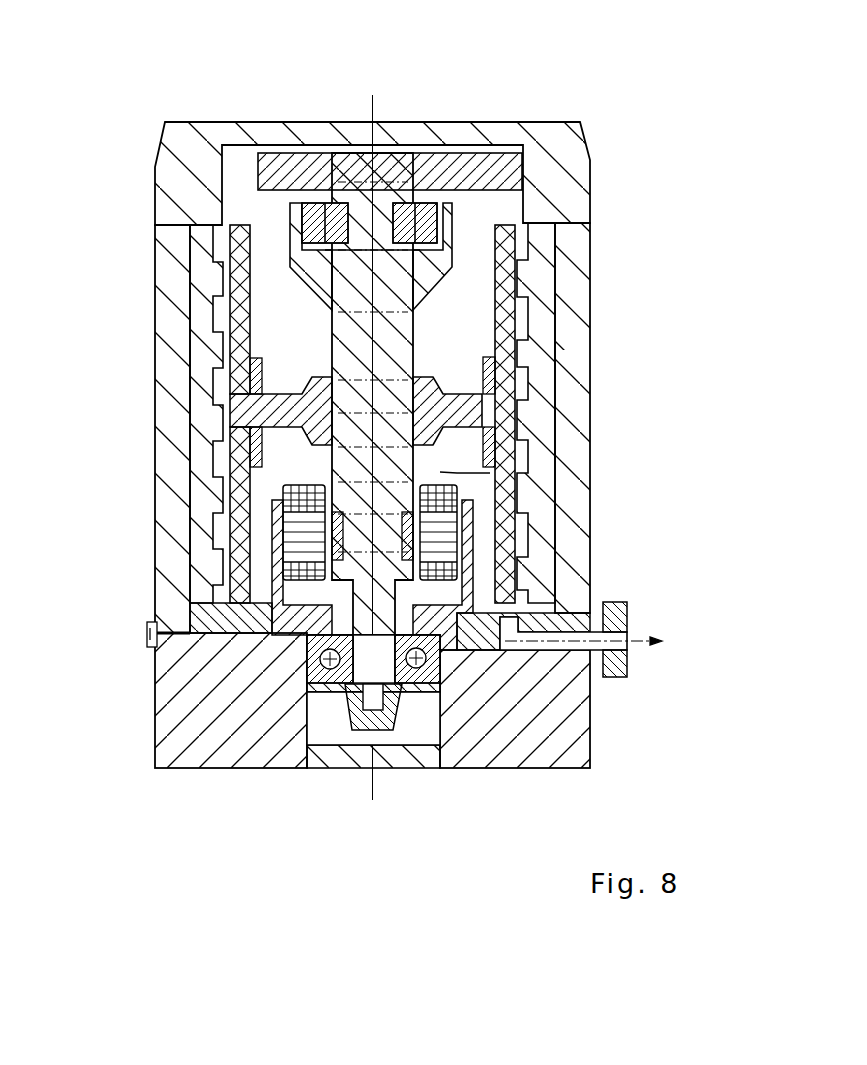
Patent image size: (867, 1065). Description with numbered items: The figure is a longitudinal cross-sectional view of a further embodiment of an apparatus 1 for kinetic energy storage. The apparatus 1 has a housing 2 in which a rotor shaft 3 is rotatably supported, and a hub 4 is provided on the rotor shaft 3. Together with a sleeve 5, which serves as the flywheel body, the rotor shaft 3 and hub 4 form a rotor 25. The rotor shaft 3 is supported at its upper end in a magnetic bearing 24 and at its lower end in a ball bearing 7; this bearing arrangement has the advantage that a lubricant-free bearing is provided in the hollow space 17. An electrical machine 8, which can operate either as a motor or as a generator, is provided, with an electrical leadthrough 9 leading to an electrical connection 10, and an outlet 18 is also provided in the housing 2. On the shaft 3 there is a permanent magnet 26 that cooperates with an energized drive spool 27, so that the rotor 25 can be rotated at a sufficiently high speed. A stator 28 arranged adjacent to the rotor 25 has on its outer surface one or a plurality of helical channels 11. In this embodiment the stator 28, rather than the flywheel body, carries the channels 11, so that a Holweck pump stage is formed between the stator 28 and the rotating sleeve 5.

The apparatus 1 is at (381, 436).
The housing 2 is at (321, 445).
The rotor shaft 3 is at (505, 418).
The hub 4 is at (454, 390).
The sleeve 5 is at (598, 413).
The ball bearing 7 is at (295, 749).
The electrical machine 8 is at (462, 413).
The electrical leadthrough 9 is at (320, 592).
The electrical connection 10 is at (101, 619).
The helical channels 11 is at (282, 414).
The hollow space 17 is at (361, 160).
The outlet 18 is at (601, 632).
The magnetic bearing 24 is at (433, 222).
The rotor 25 is at (490, 234).
The permanent magnet 26 is at (381, 679).
The drive spool 27 is at (408, 659).
The stator 28 is at (135, 414).